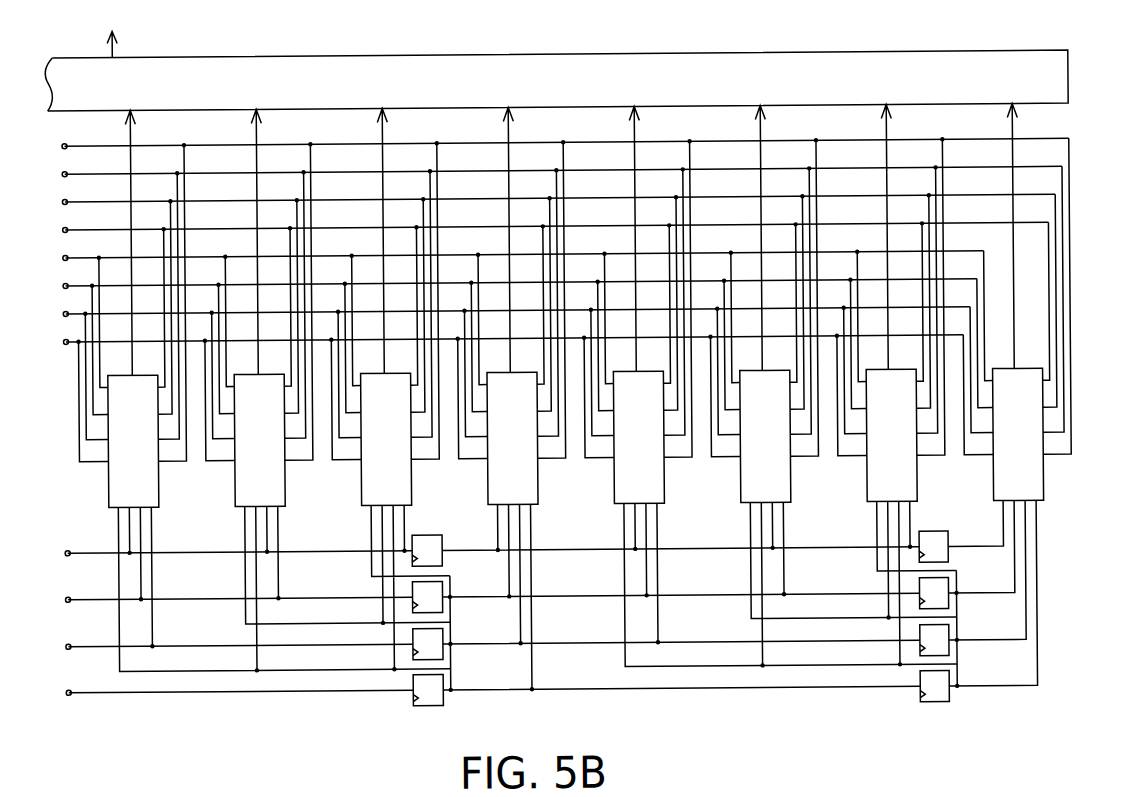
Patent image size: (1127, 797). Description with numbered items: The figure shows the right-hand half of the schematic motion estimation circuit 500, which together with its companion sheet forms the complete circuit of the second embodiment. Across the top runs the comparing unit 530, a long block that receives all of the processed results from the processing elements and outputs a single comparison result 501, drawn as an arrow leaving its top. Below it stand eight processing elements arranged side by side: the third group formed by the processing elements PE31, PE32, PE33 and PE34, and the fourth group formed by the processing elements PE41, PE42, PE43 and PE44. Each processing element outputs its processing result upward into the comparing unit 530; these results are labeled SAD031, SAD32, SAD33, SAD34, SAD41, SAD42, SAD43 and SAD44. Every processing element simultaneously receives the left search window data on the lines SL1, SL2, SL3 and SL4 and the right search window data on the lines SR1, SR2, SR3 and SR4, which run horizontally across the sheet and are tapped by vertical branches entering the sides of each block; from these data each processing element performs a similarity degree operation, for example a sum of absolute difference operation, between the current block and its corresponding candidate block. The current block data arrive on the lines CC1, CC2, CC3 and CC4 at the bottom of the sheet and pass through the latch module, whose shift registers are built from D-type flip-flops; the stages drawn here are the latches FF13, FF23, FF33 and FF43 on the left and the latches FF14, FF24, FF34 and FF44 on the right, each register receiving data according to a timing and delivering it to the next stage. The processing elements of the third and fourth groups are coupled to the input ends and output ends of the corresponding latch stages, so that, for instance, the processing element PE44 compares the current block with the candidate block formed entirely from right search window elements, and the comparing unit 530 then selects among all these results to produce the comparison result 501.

The motion estimation circuit 500 is at (553, 426).
The comparison result 501 is at (111, 29).
The comparing unit 530 is at (1070, 77).
The processing element PE31 is at (263, 406).
The processing element PE32 is at (325, 407).
The processing element PE33 is at (389, 406).
The processing element PE34 is at (512, 416).
The processing element PE41 is at (768, 402).
The processing element PE42 is at (832, 402).
The processing element PE43 is at (895, 402).
The processing element PE44 is at (1009, 412).
The latch FF13 is at (441, 558).
The latch FF23 is at (441, 604).
The latch FF33 is at (441, 652).
The latch FF43 is at (441, 698).
The latch FF14 is at (947, 558).
The latch FF24 is at (947, 604).
The latch FF34 is at (947, 652).
The latch FF44 is at (947, 698).
The processing result SAD031 is at (132, 131).
The processing result SAD32 is at (258, 131).
The processing result SAD33 is at (384, 131).
The processing result SAD34 is at (510, 131).
The processing result SAD41 is at (636, 131).
The processing result SAD42 is at (762, 131).
The processing result SAD43 is at (888, 131).
The processing result SAD44 is at (1014, 131).
The left search window data SL1 is at (553, 141).
The left search window data SL2 is at (550, 170).
The left search window data SL3 is at (546, 198).
The left search window data SL4 is at (544, 226).
The right search window data SR1 is at (510, 253).
The right search window data SR2 is at (507, 281).
The right search window data SR3 is at (503, 309).
The right search window data SR4 is at (500, 337).
The current block data line CC1 is at (477, 549).
The current block data line CC2 is at (477, 596).
The current block data line CC3 is at (478, 643).
The current block data line CC4 is at (478, 689).